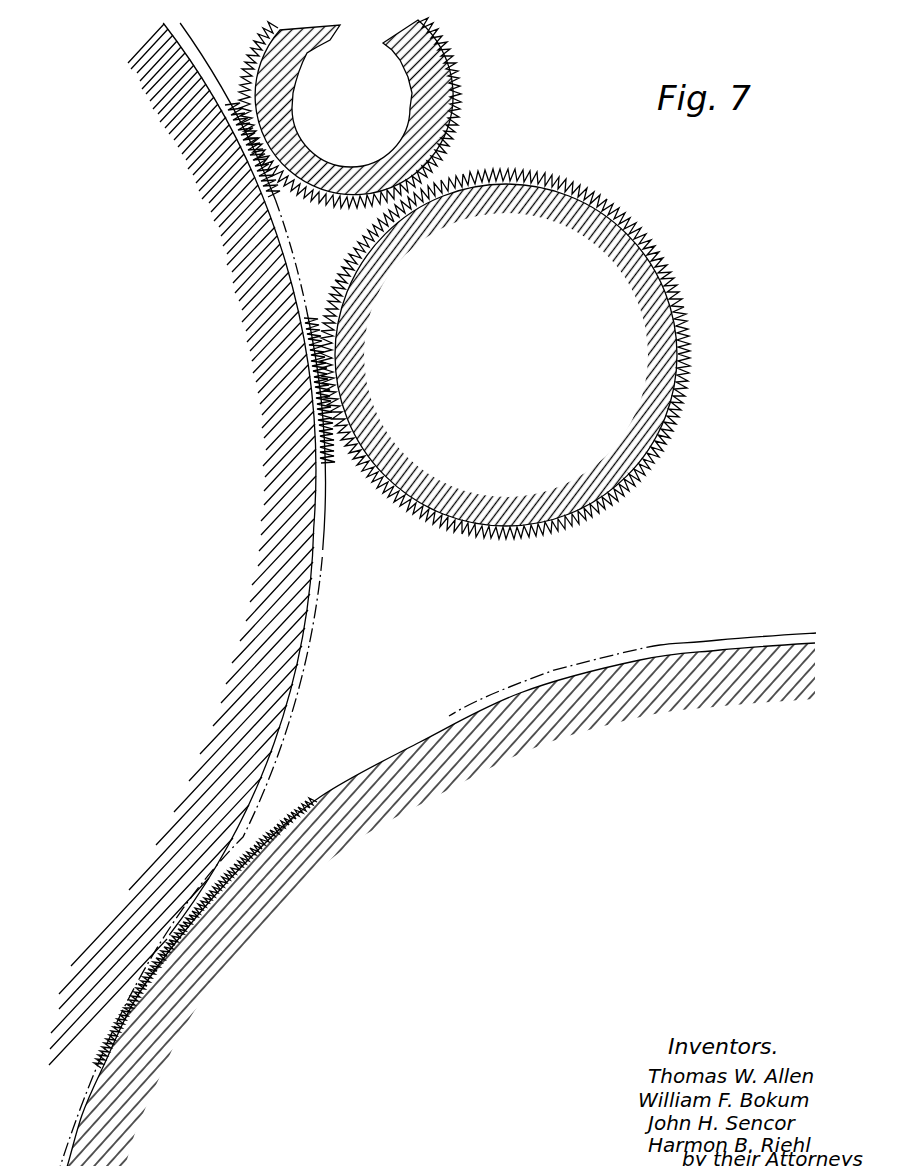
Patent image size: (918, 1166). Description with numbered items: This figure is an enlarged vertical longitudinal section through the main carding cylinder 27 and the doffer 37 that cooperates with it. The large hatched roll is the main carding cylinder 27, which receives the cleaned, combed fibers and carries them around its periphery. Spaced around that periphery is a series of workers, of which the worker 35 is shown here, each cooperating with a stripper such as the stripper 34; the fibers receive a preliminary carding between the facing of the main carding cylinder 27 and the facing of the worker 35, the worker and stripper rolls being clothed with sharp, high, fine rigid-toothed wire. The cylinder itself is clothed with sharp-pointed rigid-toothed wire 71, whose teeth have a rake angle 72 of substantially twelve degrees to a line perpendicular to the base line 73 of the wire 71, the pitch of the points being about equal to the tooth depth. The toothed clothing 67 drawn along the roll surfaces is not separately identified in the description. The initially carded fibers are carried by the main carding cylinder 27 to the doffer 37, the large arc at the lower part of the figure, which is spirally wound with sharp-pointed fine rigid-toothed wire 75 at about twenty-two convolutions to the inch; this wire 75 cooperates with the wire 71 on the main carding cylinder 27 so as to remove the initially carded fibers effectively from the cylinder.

The main carding cylinder 27 is at (287, 588).
The stripper 34 is at (450, 121).
The worker 35 is at (652, 303).
The doffer 37 is at (495, 735).
The serrations 67 is at (447, 145).
The rigid-toothed wire 71 is at (320, 500).
The rake angle 72 is at (328, 463).
The base line 73 is at (317, 528).
The fine rigid-toothed wire 75 is at (181, 928).